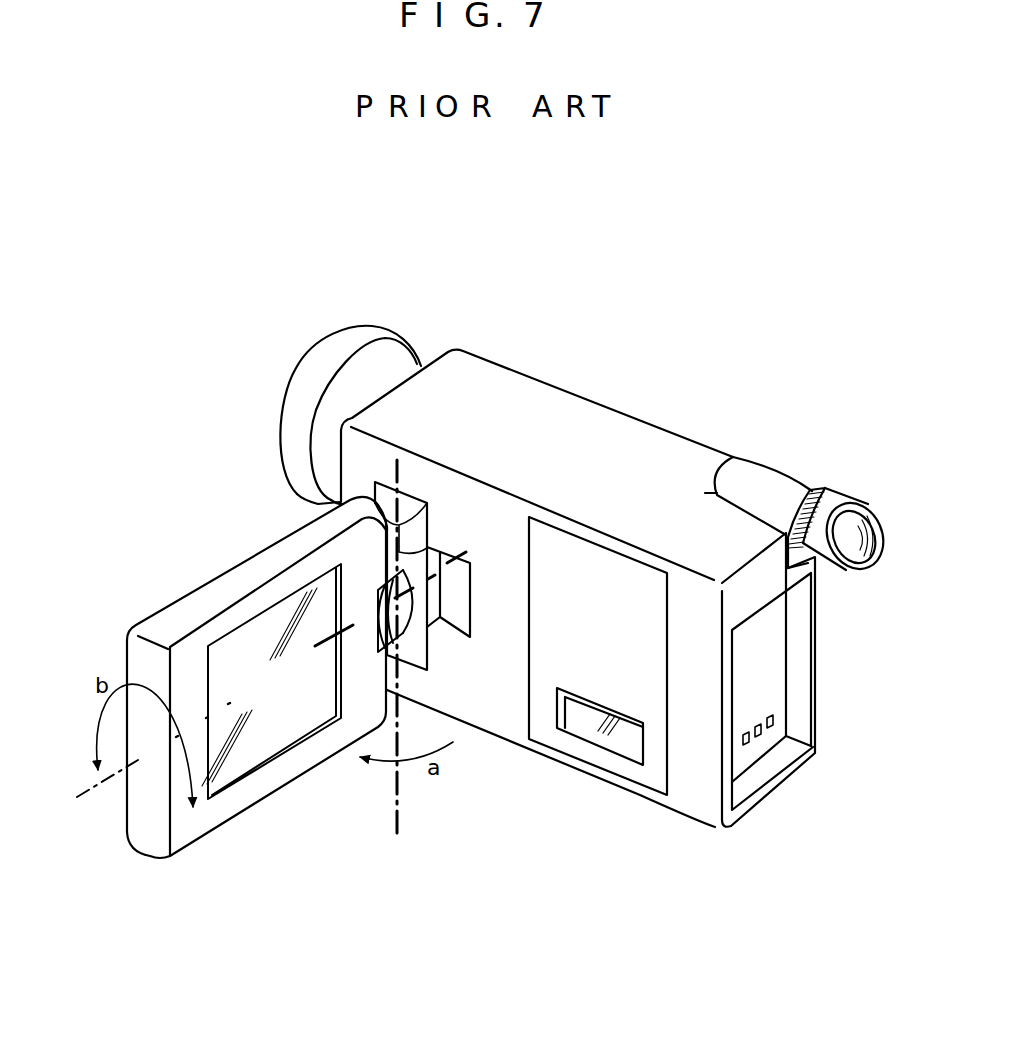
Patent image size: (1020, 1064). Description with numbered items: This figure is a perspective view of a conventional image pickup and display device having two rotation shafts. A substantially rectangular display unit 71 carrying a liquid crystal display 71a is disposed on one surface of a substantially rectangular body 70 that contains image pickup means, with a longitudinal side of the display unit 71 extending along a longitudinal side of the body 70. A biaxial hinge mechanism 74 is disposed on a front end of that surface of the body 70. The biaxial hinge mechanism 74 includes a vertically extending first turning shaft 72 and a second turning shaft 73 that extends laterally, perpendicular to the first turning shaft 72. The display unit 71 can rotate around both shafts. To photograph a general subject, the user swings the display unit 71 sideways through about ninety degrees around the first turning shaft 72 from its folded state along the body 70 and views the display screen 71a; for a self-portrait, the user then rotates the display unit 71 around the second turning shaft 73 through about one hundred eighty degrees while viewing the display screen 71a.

The body 70 is at (610, 455).
The display unit 71 is at (237, 583).
The liquid crystal display 71a is at (262, 737).
The first turning shaft 72 is at (401, 466).
The second turning shaft 73 is at (362, 612).
The biaxial hinge mechanism 74 is at (438, 530).